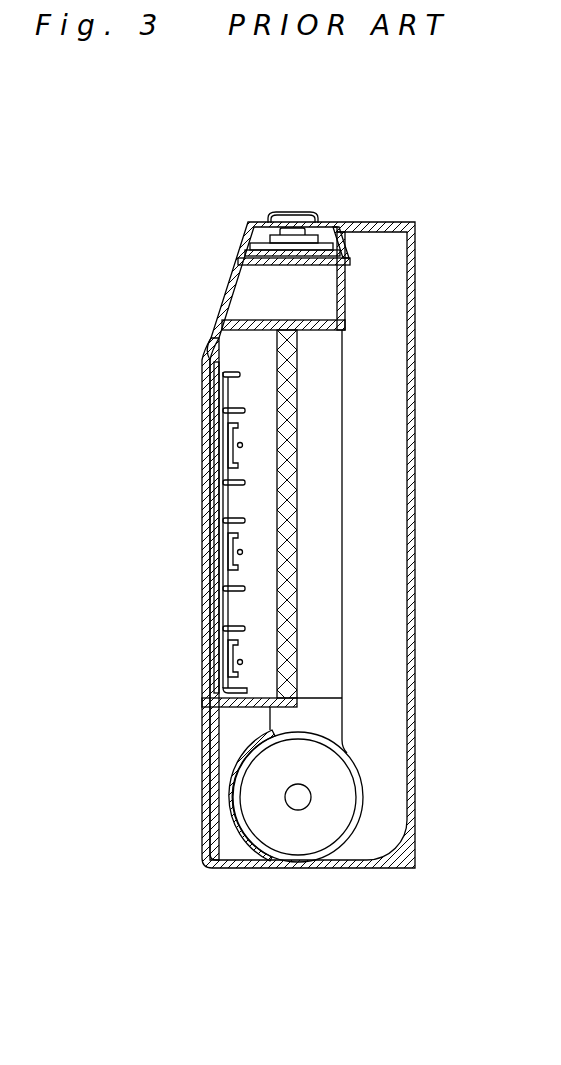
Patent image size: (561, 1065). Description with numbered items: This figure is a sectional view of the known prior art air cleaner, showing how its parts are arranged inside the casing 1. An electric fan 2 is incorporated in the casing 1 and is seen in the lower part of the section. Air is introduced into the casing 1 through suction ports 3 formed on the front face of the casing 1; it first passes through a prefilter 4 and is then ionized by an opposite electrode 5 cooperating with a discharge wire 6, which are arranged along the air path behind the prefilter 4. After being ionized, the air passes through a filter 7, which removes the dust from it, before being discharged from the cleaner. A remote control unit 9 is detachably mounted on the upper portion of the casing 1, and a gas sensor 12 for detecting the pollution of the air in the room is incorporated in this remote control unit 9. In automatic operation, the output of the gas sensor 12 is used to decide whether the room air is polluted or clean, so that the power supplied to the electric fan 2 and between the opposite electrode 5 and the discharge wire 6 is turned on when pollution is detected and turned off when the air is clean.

The casing 1 is at (415, 222).
The electric fan 2 is at (297, 798).
The suction ports 3 is at (202, 425).
The prefilter 4 is at (213, 620).
The opposite electrode 5 is at (225, 492).
The discharge wire 6 is at (242, 552).
The filter 7 is at (297, 603).
The remote control unit 9 is at (253, 222).
The gas sensor 12 is at (295, 230).